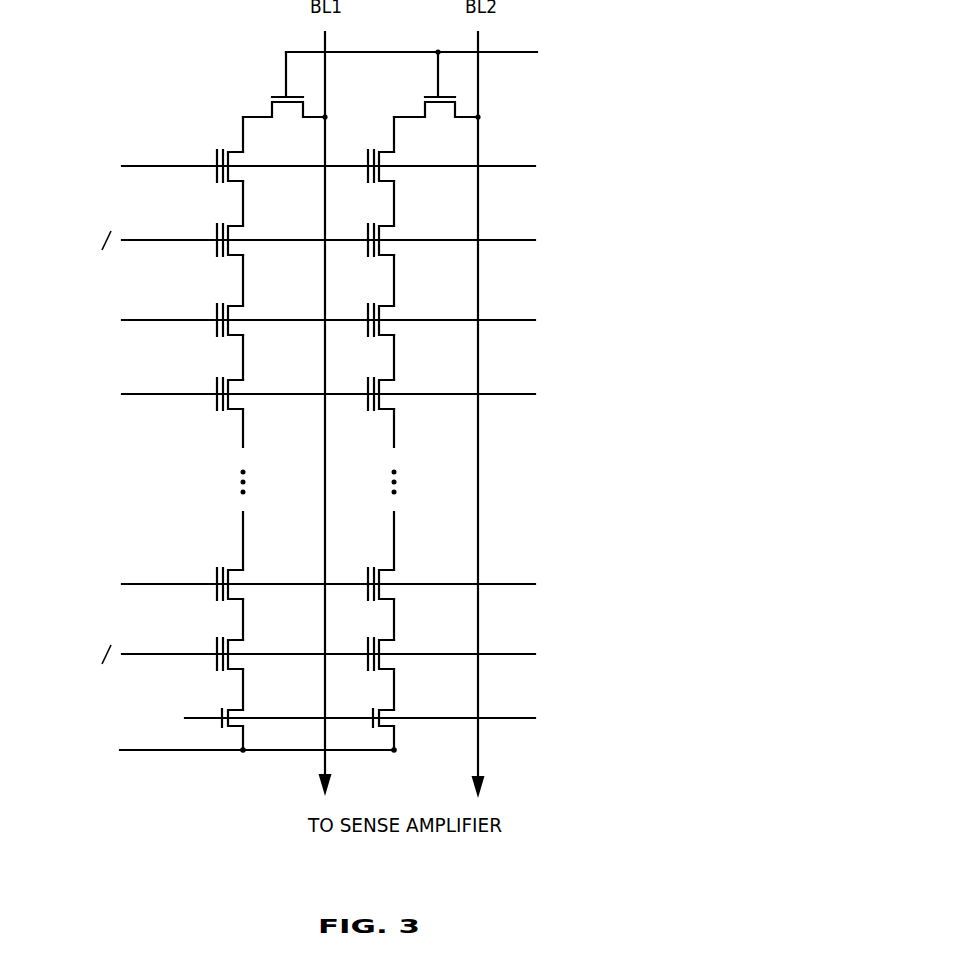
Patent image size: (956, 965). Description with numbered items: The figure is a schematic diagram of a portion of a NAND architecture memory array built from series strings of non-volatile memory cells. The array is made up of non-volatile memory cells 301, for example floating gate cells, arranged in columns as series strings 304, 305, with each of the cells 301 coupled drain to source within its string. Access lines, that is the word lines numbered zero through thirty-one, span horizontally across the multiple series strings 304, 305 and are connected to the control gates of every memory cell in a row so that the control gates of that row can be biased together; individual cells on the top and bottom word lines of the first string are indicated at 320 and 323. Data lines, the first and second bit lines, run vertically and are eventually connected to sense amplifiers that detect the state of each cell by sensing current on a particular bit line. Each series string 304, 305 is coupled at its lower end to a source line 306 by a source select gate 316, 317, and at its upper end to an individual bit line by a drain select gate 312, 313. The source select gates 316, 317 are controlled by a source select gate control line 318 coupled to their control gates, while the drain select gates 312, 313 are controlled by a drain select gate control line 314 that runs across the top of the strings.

The non-volatile memory cells 301 is at (197, 101).
The series string 304 is at (244, 752).
The series string 305 is at (395, 752).
The source line 306 is at (118, 757).
The drain select gate 312 is at (272, 93).
The drain select gate 313 is at (425, 93).
The drain select gate control line SG(D) 314 is at (525, 52).
The source select gate 316 is at (227, 731).
The source select gate 317 is at (378, 731).
The source select gate control line SG(S) 318 is at (520, 716).
The memory cell transistor on word line WL31 320 is at (217, 186).
The memory cell transistor on word line WL0 323 is at (216, 672).